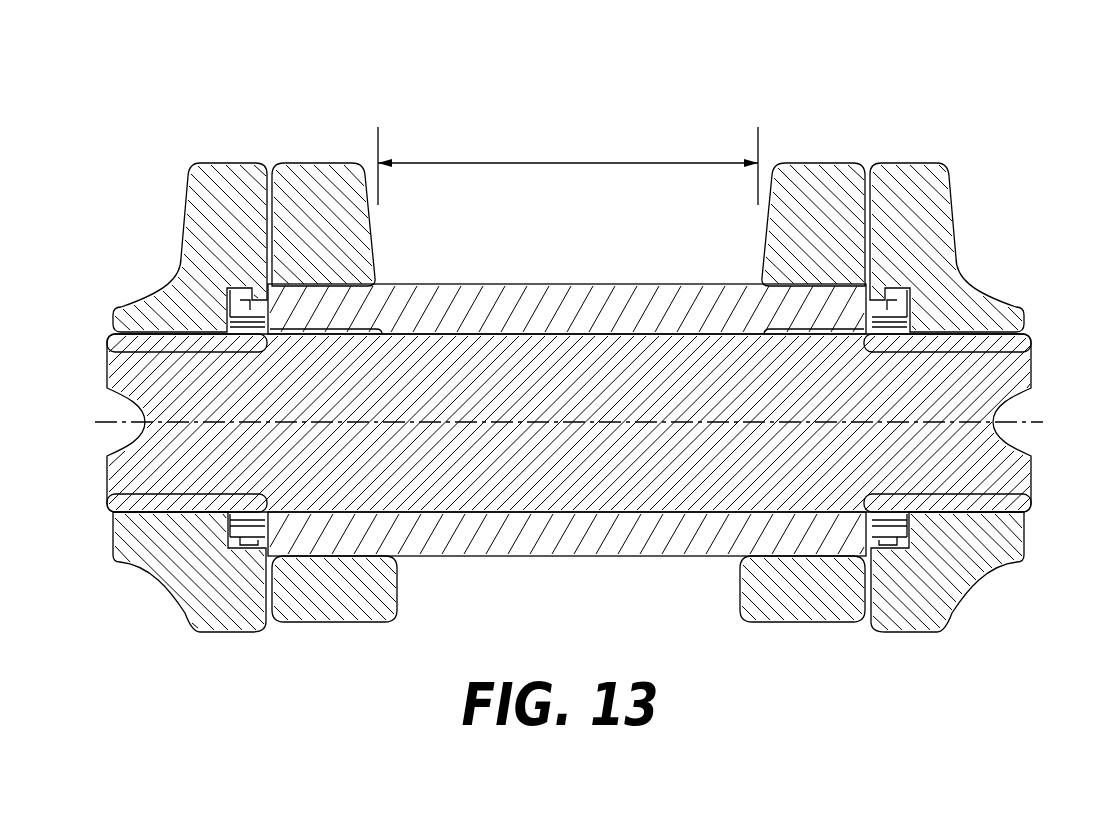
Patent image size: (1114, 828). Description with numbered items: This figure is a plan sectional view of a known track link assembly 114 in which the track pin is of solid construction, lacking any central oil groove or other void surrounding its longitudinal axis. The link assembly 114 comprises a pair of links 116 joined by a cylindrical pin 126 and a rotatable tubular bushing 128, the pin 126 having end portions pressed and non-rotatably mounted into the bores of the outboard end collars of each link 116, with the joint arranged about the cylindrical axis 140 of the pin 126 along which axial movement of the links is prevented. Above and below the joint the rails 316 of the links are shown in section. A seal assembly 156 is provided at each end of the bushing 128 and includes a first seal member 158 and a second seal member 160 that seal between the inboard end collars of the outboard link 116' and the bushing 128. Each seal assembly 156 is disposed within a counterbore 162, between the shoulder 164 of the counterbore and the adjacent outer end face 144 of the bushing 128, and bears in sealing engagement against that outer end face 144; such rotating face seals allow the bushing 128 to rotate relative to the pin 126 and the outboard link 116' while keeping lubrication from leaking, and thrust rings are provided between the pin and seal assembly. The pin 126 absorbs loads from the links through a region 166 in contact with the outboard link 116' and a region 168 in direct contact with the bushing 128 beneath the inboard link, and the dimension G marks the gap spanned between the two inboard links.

The link assembly 114 is at (924, 152).
The link 116 is at (568, 383).
The outboard link 116' is at (573, 429).
The pin 126 is at (613, 482).
The bushing 128 is at (628, 550).
The cylindrical axis 140 is at (1038, 425).
The outer end face 144 is at (280, 300).
The seal assembly 156 is at (232, 280).
The first seal member 158 is at (236, 303).
The second seal member 160 is at (290, 303).
The counterbore 162 is at (230, 323).
The shoulder 164 is at (118, 333).
The region 166 is at (200, 352).
The region 168 is at (325, 327).
The rail 316 is at (231, 163).
The gap dimension G is at (559, 163).